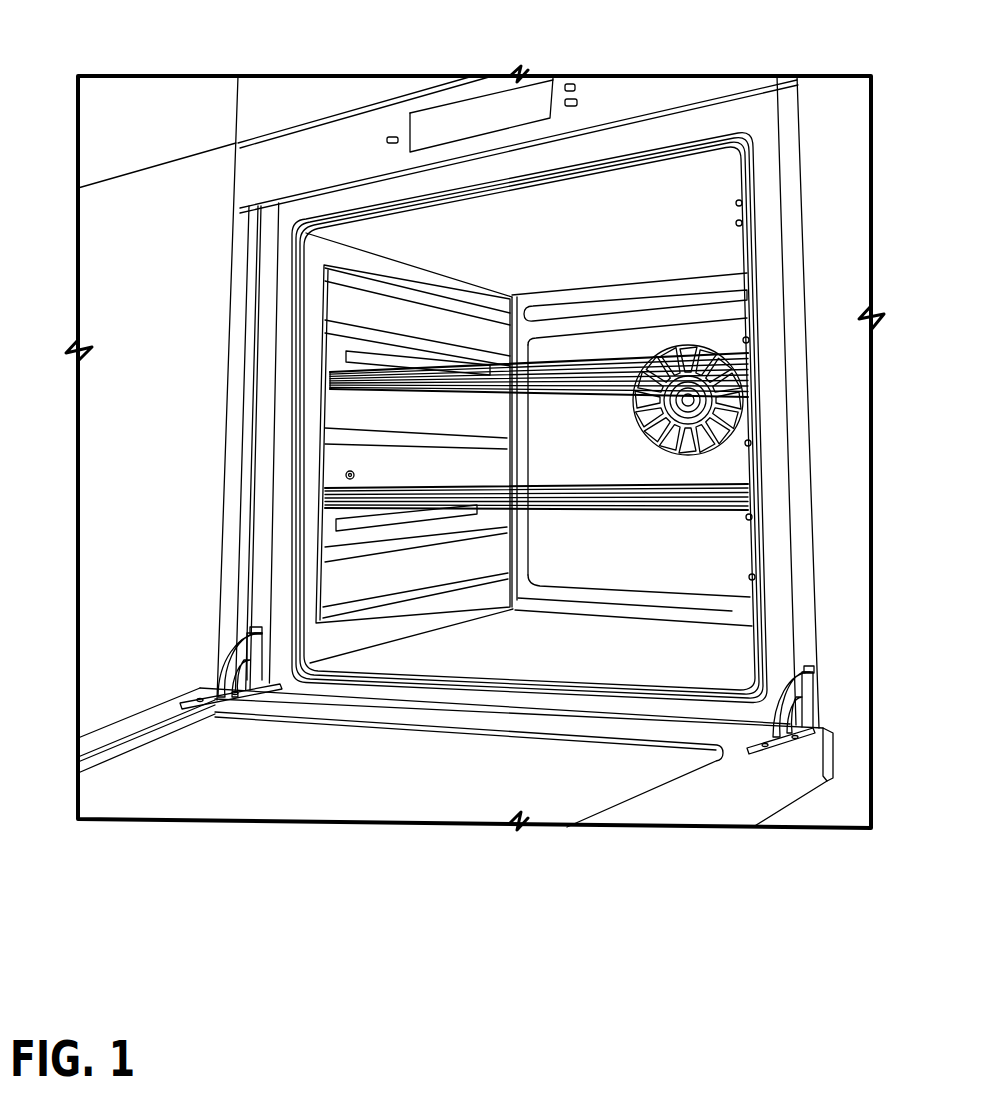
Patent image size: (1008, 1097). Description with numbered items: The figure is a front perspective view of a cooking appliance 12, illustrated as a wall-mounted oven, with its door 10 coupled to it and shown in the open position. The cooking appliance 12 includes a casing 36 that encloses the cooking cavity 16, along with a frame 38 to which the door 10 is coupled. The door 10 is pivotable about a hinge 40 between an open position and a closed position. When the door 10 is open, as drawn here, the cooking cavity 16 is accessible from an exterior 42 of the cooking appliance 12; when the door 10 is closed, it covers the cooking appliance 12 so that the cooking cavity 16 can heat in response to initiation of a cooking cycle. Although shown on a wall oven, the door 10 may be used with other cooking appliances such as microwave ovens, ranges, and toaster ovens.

The door 10 is at (118, 718).
The cooking appliance 12 is at (232, 140).
The cooking cavity 16 is at (668, 566).
The casing 36 is at (250, 431).
The frame 38 is at (290, 287).
The hinge 40 is at (225, 656).
The exterior 42 is at (143, 486).